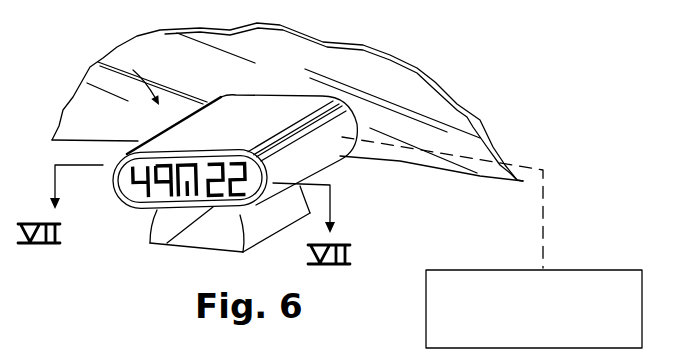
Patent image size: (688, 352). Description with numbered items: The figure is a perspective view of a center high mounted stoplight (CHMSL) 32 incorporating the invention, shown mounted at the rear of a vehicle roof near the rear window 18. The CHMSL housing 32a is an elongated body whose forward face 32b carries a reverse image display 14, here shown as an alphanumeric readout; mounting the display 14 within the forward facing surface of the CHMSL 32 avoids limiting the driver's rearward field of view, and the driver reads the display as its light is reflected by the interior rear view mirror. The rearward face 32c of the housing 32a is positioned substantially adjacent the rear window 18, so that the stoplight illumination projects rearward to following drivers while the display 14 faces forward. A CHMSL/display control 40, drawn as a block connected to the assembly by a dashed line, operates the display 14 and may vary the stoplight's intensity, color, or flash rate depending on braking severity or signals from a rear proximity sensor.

The reverse image display 14 is at (130, 204).
The rear window 18 is at (415, 158).
The center high mounted stoplight (CHMSL) 32 is at (98, 63).
The CHMSL housing 32a is at (241, 116).
The forward face 32b is at (150, 243).
The rearward face 32c is at (357, 118).
The CHMSL/display control 40 is at (426, 308).